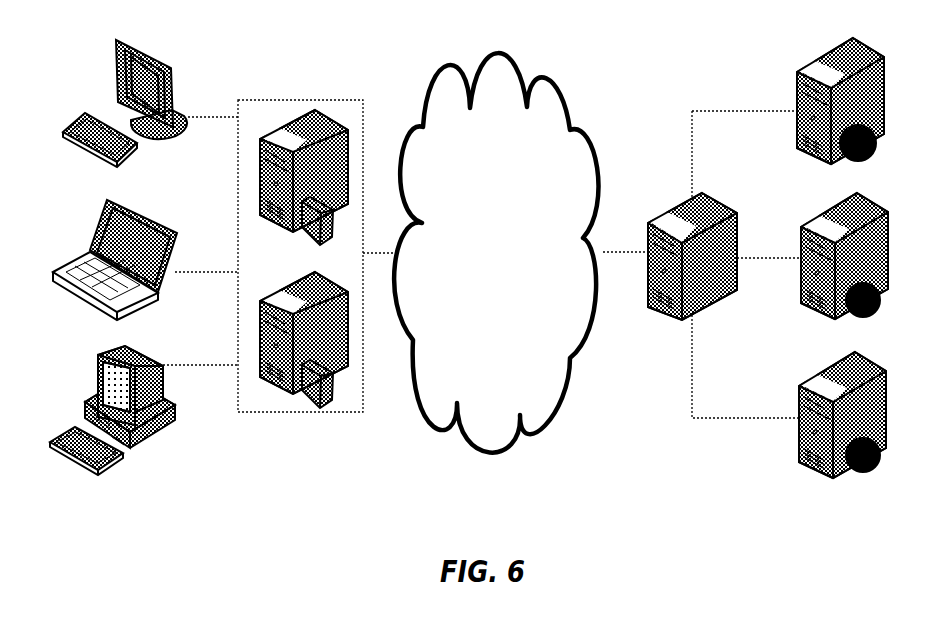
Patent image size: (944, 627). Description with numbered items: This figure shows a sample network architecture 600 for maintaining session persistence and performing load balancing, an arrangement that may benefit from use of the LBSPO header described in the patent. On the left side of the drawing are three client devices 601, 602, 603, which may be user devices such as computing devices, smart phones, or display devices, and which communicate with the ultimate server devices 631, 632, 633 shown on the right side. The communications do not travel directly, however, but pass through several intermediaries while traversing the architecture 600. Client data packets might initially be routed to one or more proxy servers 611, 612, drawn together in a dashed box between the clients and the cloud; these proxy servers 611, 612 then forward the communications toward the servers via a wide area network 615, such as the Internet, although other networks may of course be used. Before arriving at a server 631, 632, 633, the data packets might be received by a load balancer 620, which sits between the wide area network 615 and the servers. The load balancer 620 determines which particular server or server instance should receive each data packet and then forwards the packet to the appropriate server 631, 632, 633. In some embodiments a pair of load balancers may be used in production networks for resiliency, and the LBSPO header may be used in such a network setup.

The network architecture 600 is at (668, 490).
The client device 601 is at (174, 142).
The client device 602 is at (166, 282).
The client device 603 is at (175, 428).
The proxy server 611 is at (328, 100).
The proxy server 612 is at (293, 400).
The wide area network 615 is at (517, 435).
The load balancer 620 is at (658, 318).
The server device 631 is at (797, 132).
The server device 632 is at (798, 288).
The server device 633 is at (798, 447).